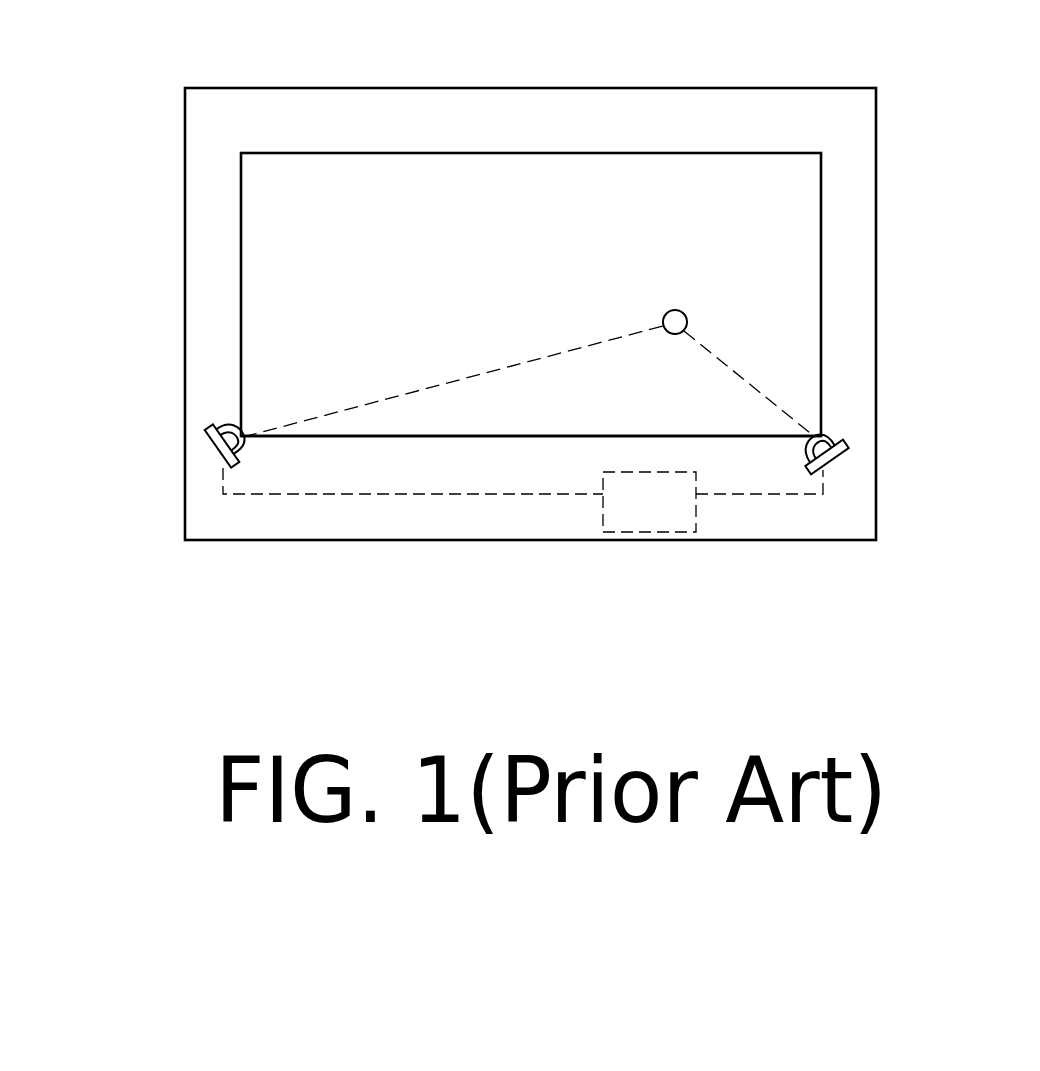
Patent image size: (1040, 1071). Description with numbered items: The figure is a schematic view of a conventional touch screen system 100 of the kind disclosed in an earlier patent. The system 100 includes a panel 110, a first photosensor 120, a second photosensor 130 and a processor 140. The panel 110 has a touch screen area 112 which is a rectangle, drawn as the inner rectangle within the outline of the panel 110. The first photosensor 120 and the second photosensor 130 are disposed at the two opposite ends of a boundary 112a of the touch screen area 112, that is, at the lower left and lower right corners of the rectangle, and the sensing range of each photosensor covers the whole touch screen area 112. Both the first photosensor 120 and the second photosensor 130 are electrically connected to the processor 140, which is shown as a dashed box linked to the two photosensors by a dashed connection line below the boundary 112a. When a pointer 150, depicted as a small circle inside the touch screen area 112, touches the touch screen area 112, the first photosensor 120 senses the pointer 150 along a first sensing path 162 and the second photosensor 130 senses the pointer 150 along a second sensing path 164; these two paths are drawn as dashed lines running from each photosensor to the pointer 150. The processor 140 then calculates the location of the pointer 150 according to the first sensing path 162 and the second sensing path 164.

The touch screen system 100 is at (1035, 637).
The panel 110 is at (876, 141).
The touch screen area 112 is at (660, 185).
The boundary 112a is at (502, 438).
The first photosensor 120 is at (208, 441).
The second photosensor 130 is at (836, 470).
The processor 140 is at (645, 533).
The pointer 150 is at (687, 317).
The first sensing path 162 is at (383, 400).
The second sensing path 164 is at (770, 393).